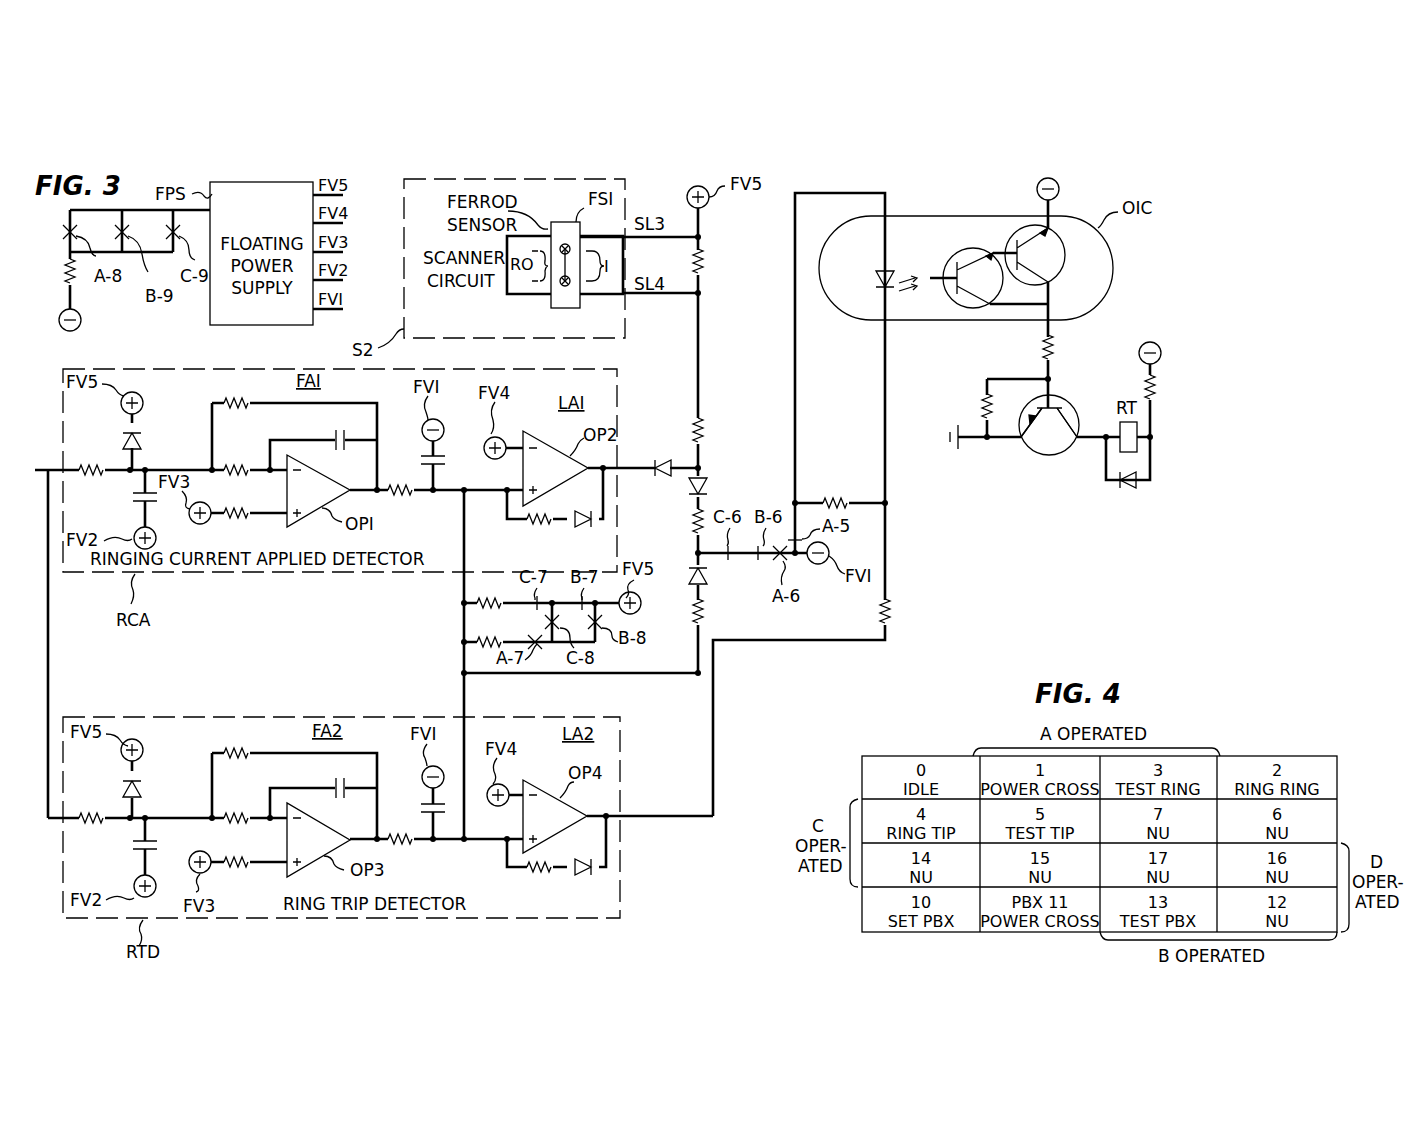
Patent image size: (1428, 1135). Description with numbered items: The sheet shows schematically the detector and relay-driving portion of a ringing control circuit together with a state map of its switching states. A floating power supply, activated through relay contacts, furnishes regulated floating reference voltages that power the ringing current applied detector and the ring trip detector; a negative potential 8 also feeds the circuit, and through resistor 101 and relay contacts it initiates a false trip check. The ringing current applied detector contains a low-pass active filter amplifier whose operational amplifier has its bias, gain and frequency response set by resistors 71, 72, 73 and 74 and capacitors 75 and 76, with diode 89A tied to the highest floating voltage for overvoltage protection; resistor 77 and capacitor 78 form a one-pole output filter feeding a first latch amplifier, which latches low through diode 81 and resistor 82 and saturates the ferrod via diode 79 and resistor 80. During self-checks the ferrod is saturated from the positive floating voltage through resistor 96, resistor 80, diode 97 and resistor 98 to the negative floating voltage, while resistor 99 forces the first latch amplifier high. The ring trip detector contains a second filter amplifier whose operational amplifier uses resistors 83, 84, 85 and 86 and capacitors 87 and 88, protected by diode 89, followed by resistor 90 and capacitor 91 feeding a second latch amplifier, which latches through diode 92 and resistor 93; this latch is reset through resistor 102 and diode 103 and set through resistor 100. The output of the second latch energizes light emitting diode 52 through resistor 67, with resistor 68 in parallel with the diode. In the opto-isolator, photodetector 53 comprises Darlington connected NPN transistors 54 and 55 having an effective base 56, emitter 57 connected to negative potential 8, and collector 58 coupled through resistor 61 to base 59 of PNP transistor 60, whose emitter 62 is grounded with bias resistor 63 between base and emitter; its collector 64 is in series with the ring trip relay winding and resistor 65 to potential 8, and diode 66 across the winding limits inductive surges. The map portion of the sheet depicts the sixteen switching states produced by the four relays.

The negative potential 8 is at (81, 323).
The resistor 101 is at (78, 288).
The resistor 96 is at (706, 264).
The resistor 80 is at (706, 432).
The diode 79 is at (664, 455).
The diode 97 is at (708, 489).
The resistor 98 is at (690, 521).
The diode 103 is at (708, 577).
The resistor 102 is at (706, 613).
The resistor 68 is at (838, 490).
The resistor 67 is at (893, 612).
The photodetector 53 is at (999, 201).
The light emitting diode 52 is at (876, 282).
The NPN transistor 54 is at (946, 300).
The NPN transistor 55 is at (1060, 268).
The base 56 is at (945, 274).
The emitter 57 is at (1050, 224).
The collector 58 is at (1050, 312).
The resistor 61 is at (1040, 347).
The resistor 65 is at (1158, 386).
The bias resistor 63 is at (979, 408).
The PNP transistor 60 is at (1066, 448).
The base 59 is at (1052, 396).
The collector 64 is at (1072, 418).
The emitter 62 is at (1028, 440).
The diode 66 is at (1126, 490).
The resistor 71 is at (92, 458).
The diode 89A is at (142, 440).
The capacitor 75 is at (130, 502).
The resistor 73 is at (246, 374).
The resistor 72 is at (237, 458).
The capacitor 76 is at (326, 428).
The resistor 74 is at (244, 506).
The resistor 77 is at (405, 500).
The capacitor 78 is at (446, 462).
The diode 81 is at (585, 509).
The resistor 82 is at (540, 530).
The resistor 99 is at (506, 578).
The resistor 100 is at (484, 632).
The resistor 83 is at (92, 806).
The diode 89 is at (142, 788).
The capacitor 87 is at (130, 850).
The resistor 85 is at (230, 746).
The resistor 84 is at (237, 806).
The capacitor 88 is at (326, 776).
The resistor 86 is at (244, 855).
The resistor 90 is at (403, 850).
The capacitor 91 is at (420, 806).
The diode 92 is at (585, 857).
The resistor 93 is at (540, 878).